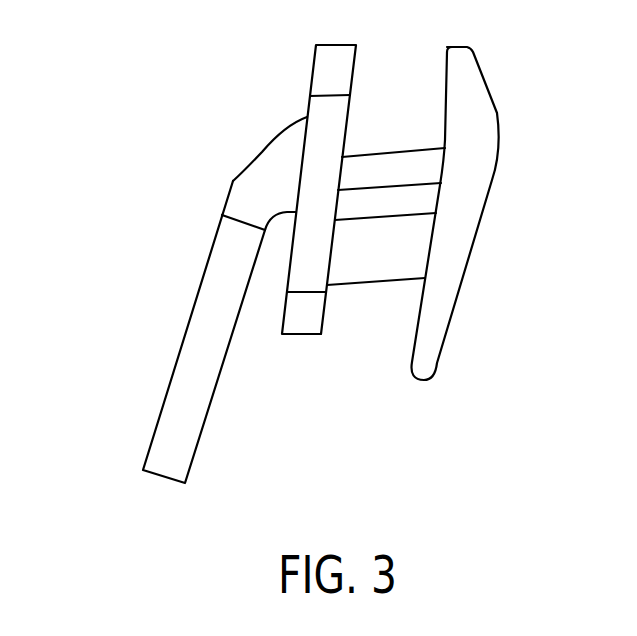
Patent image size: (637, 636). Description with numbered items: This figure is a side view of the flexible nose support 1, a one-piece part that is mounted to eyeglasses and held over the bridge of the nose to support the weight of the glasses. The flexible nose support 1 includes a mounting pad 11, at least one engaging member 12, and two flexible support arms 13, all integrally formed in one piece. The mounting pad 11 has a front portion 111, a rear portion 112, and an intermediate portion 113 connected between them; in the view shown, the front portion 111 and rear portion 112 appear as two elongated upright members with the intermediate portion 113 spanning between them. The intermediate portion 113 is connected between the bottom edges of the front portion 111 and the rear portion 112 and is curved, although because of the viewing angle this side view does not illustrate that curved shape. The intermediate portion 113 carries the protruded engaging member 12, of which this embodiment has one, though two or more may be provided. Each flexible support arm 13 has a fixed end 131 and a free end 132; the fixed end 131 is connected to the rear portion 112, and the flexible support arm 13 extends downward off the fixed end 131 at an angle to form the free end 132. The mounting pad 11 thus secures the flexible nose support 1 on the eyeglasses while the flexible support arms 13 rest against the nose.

The flexible nose support 1 is at (142, 67).
The mounting pad 11 is at (428, 446).
The front portion 111 is at (422, 365).
The rear portion 112 is at (303, 317).
The intermediate portion 113 is at (362, 256).
The engaging member 12 is at (395, 163).
The flexible support arm 13 is at (110, 277).
The fixed end 131 is at (253, 193).
The free end 132 is at (168, 460).